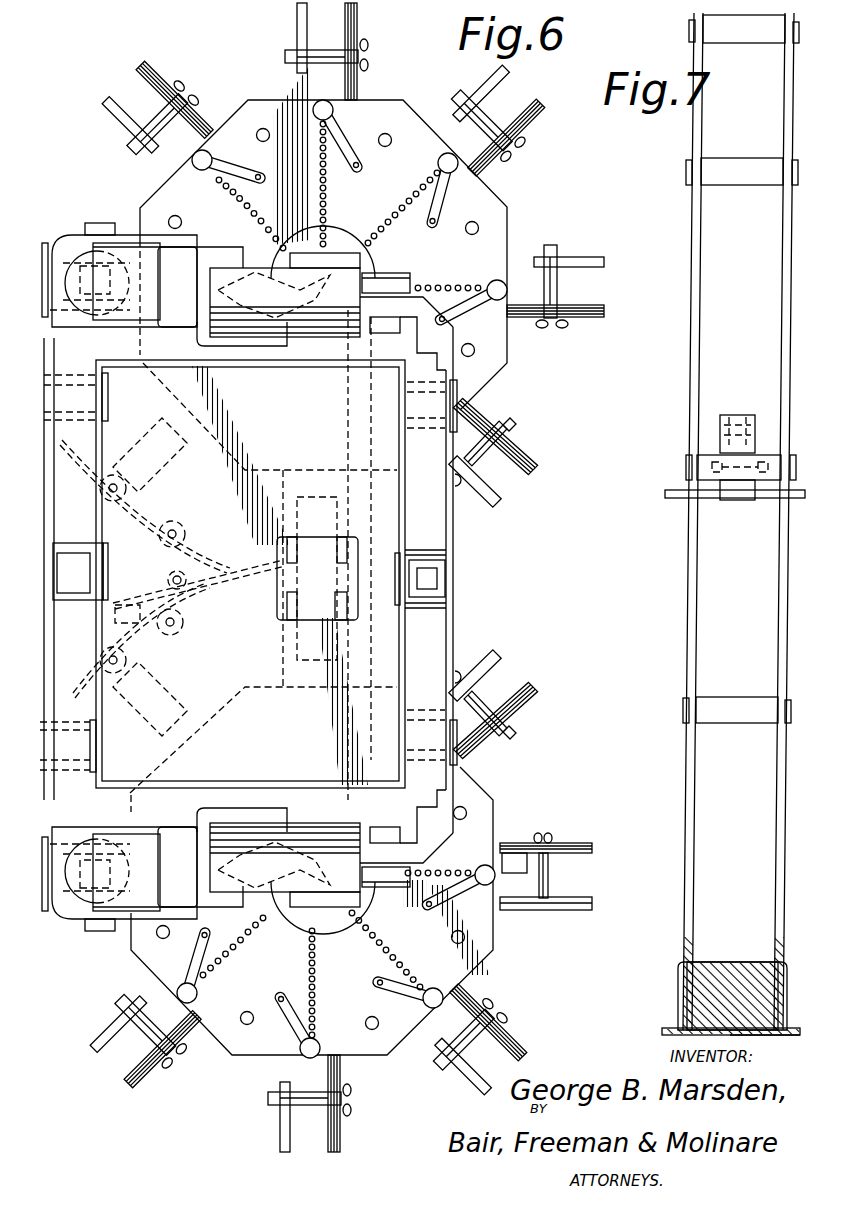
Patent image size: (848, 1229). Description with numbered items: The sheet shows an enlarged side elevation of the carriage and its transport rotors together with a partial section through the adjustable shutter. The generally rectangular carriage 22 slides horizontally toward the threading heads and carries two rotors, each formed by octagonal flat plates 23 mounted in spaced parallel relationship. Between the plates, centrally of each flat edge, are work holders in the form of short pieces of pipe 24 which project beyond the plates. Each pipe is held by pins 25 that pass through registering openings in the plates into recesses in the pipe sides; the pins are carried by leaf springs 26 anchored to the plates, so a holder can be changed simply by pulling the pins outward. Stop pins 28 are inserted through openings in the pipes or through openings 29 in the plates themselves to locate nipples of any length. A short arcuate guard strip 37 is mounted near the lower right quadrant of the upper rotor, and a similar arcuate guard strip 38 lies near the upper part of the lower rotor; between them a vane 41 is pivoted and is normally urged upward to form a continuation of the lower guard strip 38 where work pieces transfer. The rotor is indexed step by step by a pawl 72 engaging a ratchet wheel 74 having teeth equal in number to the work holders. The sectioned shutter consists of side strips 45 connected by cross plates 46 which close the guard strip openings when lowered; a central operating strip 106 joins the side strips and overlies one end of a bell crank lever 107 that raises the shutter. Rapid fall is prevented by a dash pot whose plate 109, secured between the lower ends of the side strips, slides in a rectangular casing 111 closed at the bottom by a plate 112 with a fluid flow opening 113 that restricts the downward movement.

In FIG. 6, the carriage 22 is at (454, 540).
In FIG. 6, the flat plates 23 is at (163, 197).
In FIG. 6, the pipes 24 is at (297, 80).
In FIG. 6, the pins 25 is at (208, 154).
In FIG. 6, the leaf springs 26 is at (242, 166).
In FIG. 6, the stop pins 28 is at (318, 50).
In FIG. 6, the openings 29 is at (243, 203).
In FIG. 6, the arcuate guard strip 37 is at (193, 550).
In FIG. 6, the arcuate guard strip 38 is at (193, 604).
In FIG. 6, the vane 41 is at (248, 560).
In FIG. 6, the pawl 72 is at (327, 932).
In FIG. 6, the ratchet wheel 74 is at (323, 576).
In FIG. 7, the side strips 45 is at (780, 592).
In FIG. 7, the cross plates 46 is at (735, 182).
In FIG. 7, the central operating strip 106 is at (707, 455).
In FIG. 7, the bell crank lever 107 is at (733, 497).
In FIG. 7, the plate 109 is at (723, 970).
In FIG. 7, the rectangular casing 111 is at (672, 989).
In FIG. 7, the plate 112 is at (670, 1033).
In FIG. 7, the fluid flow opening 113 is at (730, 1032).